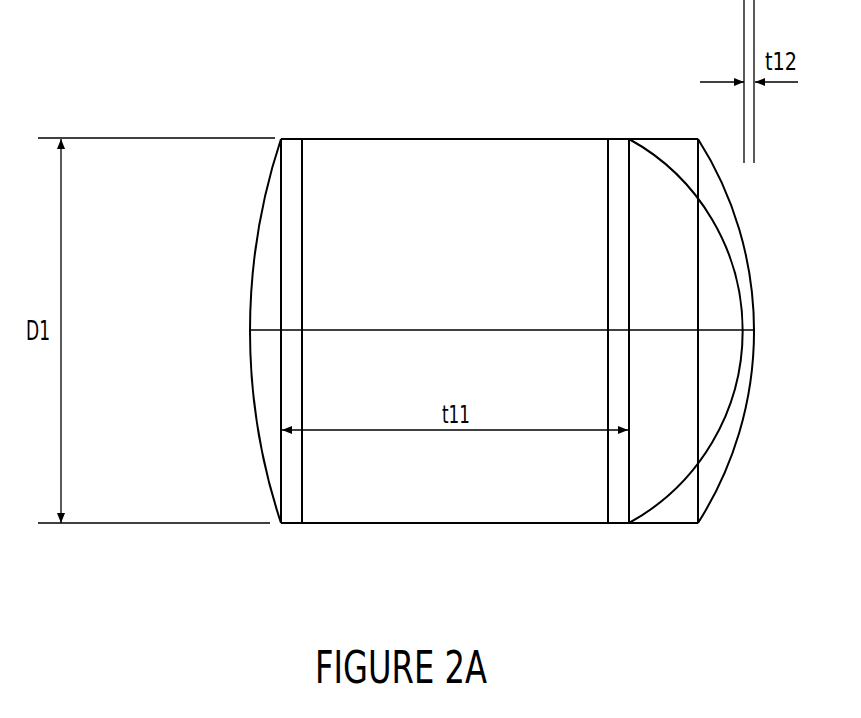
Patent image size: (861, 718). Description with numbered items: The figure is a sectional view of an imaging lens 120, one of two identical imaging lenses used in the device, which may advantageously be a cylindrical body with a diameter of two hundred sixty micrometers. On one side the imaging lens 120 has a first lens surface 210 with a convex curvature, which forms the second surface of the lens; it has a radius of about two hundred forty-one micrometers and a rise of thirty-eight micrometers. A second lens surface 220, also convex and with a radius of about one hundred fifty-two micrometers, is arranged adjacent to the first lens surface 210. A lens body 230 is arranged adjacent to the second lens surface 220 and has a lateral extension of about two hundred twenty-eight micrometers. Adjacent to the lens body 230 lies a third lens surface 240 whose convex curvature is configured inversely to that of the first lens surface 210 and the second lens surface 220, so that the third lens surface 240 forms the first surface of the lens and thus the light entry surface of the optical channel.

The imaging lens 120 is at (499, 307).
The first lens surface 210 is at (756, 266).
The second lens surface 220 is at (705, 204).
The lens body 230 is at (488, 512).
The third lens surface 240 is at (248, 271).